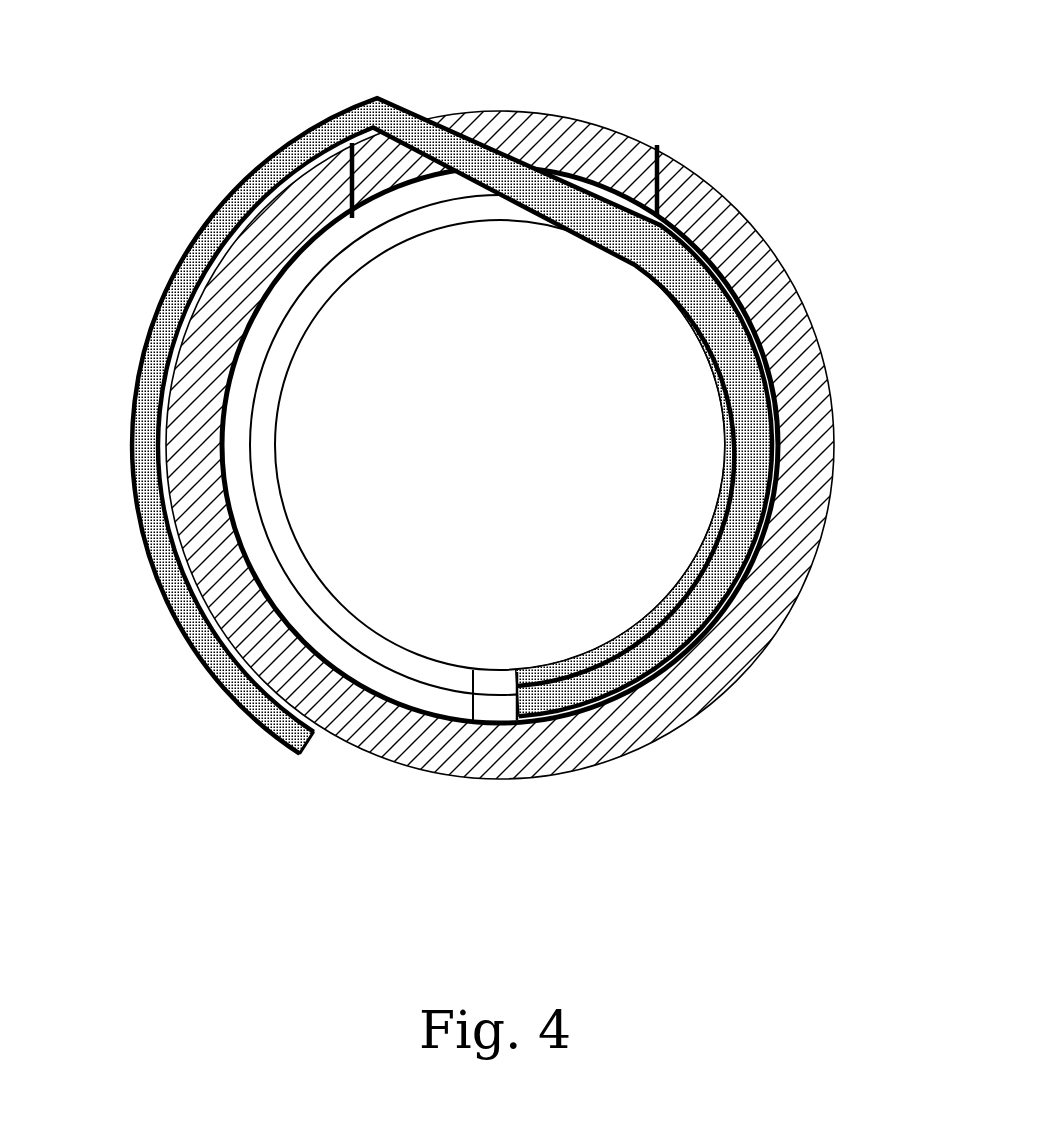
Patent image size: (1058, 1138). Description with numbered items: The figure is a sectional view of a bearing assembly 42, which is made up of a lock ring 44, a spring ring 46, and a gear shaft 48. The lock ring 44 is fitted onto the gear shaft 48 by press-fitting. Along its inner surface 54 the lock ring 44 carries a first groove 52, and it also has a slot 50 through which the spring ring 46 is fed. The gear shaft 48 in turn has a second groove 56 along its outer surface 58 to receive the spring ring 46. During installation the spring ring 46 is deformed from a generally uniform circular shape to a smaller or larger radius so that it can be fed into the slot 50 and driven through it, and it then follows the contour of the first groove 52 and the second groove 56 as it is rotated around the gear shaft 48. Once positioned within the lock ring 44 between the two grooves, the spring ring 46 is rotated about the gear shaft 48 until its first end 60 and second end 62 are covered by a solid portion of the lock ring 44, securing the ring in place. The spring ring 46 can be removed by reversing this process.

The bearing assembly 42 is at (796, 96).
The lock ring 44 is at (777, 258).
The spring ring 46 is at (273, 160).
The gear shaft 48 is at (497, 464).
The slot 50 is at (648, 176).
The first groove 52 is at (397, 708).
The inner surface 54 is at (261, 390).
The second groove 56 is at (475, 725).
The outer surface 58 is at (262, 551).
The first end 60 is at (525, 729).
The second end 62 is at (257, 746).